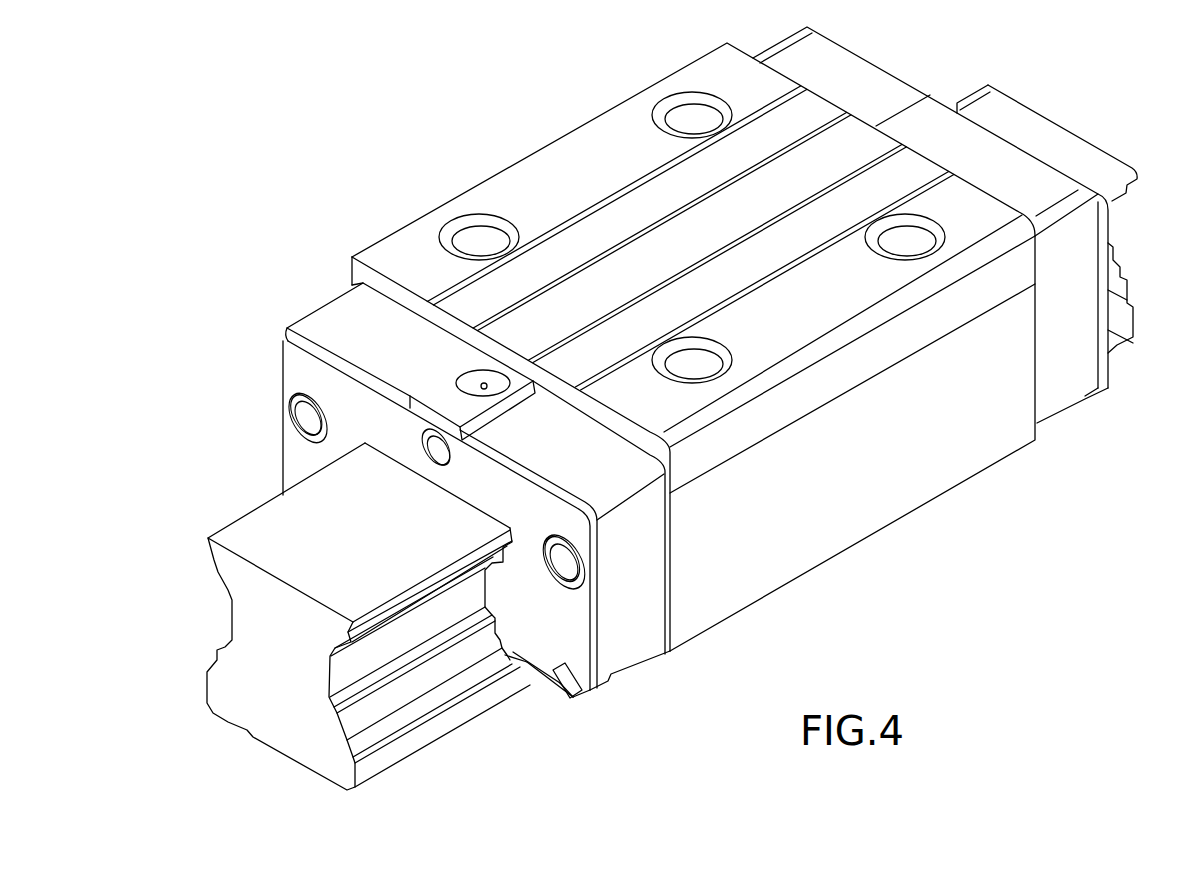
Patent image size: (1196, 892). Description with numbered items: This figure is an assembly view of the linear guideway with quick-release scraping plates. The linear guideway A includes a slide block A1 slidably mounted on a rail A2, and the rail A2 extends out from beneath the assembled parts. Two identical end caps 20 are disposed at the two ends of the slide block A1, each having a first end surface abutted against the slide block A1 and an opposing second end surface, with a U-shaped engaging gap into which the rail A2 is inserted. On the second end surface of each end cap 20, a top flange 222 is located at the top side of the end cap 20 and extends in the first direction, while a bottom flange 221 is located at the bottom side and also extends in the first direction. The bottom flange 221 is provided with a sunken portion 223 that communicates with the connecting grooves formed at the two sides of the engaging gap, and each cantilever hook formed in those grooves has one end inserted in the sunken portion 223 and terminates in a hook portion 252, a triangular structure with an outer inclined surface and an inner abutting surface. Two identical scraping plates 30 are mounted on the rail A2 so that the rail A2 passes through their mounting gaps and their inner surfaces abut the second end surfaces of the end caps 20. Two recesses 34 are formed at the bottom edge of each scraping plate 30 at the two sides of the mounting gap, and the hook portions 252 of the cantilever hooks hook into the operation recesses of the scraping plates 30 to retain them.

The linear guideway A is at (262, 165).
The slide block A1 is at (387, 252).
The rail A2 is at (262, 520).
The end cap 20 is at (322, 303).
The scraping plate 30 is at (284, 446).
The recess 34 is at (530, 657).
The bottom flange 221 is at (533, 675).
The top flange 222 is at (310, 347).
The sunken portion 223 is at (558, 697).
The hook portion 252 is at (567, 695).